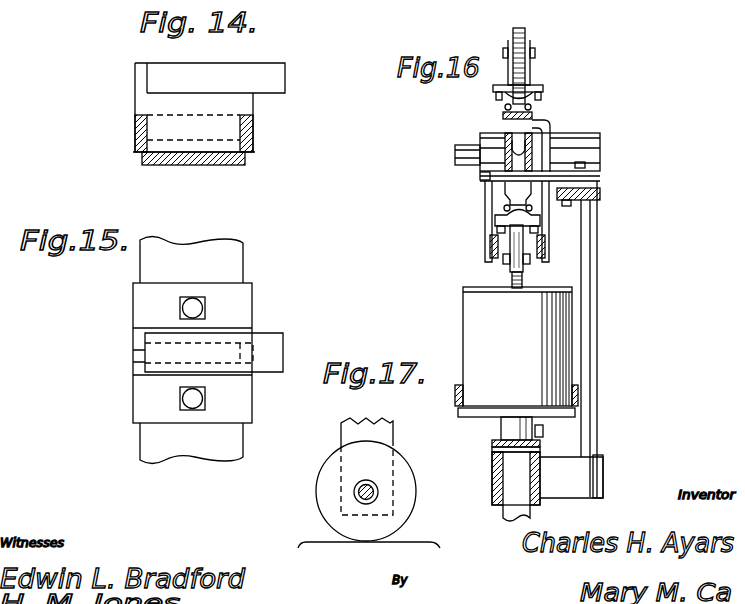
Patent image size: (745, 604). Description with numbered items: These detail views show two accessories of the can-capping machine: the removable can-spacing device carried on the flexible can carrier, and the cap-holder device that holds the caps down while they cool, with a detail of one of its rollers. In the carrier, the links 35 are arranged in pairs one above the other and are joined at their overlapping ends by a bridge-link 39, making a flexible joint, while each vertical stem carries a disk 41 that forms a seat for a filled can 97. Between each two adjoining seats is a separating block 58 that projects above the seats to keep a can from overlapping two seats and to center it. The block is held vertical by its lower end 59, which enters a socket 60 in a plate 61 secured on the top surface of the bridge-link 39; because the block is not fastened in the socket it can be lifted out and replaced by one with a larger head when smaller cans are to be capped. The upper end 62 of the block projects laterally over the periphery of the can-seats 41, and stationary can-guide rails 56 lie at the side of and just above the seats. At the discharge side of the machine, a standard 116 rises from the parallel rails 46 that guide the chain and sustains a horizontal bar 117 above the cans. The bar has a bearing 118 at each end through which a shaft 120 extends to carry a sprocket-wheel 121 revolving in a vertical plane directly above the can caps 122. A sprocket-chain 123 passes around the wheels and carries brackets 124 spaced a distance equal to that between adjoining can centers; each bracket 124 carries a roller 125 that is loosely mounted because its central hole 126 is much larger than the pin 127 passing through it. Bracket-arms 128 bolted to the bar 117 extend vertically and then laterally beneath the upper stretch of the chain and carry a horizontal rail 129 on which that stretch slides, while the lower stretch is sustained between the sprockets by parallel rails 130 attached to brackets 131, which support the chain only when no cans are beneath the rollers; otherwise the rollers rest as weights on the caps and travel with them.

In FIG. 16, the links 35 is at (545, 452).
In FIG. 14, the bridge-link 39 is at (185, 160).
In FIG. 15, the bridge-link 39 is at (191, 350).
In FIG. 16, the bridge-link 39 is at (492, 443).
In FIG. 16, the disk 41 is at (575, 414).
In FIG. 16, the parallel rails 46 is at (492, 478).
In FIG. 16, the can-guide rails 56 is at (578, 390).
In FIG. 14, the separating blocks 58 is at (194, 107).
In FIG. 15, the separating blocks 58 is at (140, 352).
In FIG. 14, the lower ends 59 is at (225, 132).
In FIG. 14, the socket 60 is at (253, 155).
In FIG. 14, the plate 61 is at (135, 125).
In FIG. 15, the plate 61 is at (192, 353).
In FIG. 14, the upper end 62 is at (268, 80).
In FIG. 15, the upper end 62 is at (264, 350).
In FIG. 16, the can 97 is at (517, 346).
In FIG. 16, the standard 116 is at (591, 307).
In FIG. 16, the horizontal bar 117 is at (600, 196).
In FIG. 16, the bearing 118 is at (563, 140).
In FIG. 16, the shaft 120 is at (456, 158).
In FIG. 16, the sprocket-wheels 121 is at (485, 173).
In FIG. 17, the can caps 122 is at (398, 544).
In FIG. 16, the sprocket-chain 123 is at (505, 108).
In FIG. 17, the brackets 124 is at (350, 431).
In FIG. 16, the brackets 124 is at (530, 70).
In FIG. 17, the roller 125 is at (326, 466).
In FIG. 16, the roller 125 is at (525, 32).
In FIG. 17, the central hole 126 is at (366, 482).
In FIG. 17, the pin 127 is at (357, 494).
In FIG. 16, the pin 127 is at (533, 54).
In FIG. 16, the bracket-arms 128 is at (546, 121).
In FIG. 16, the horizontal rail 129 is at (505, 117).
In FIG. 16, the parallel rails 130 is at (490, 250).
In FIG. 16, the brackets 131 is at (485, 196).